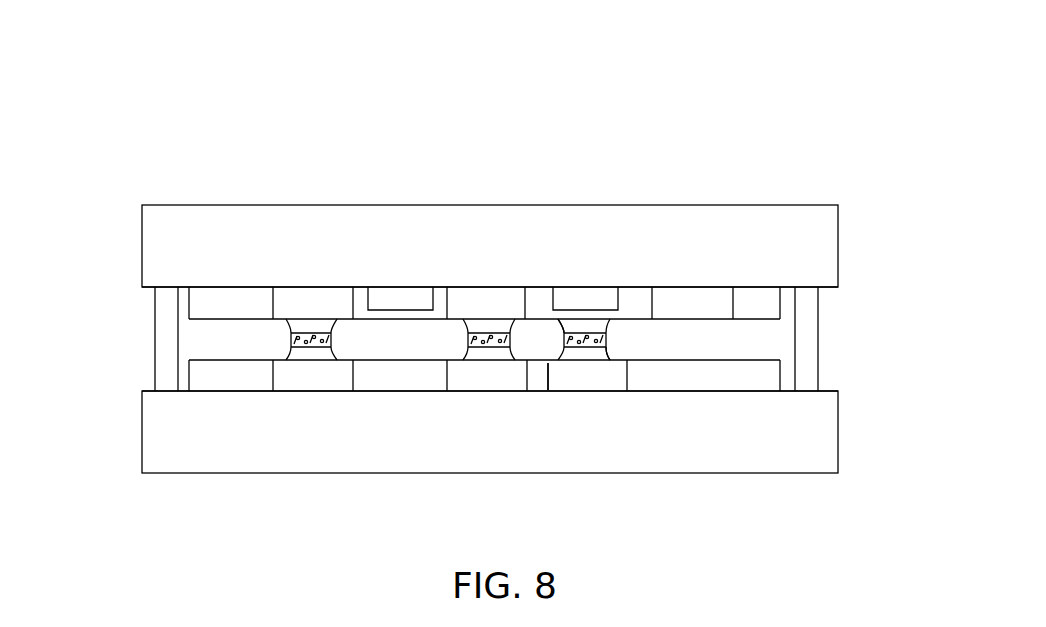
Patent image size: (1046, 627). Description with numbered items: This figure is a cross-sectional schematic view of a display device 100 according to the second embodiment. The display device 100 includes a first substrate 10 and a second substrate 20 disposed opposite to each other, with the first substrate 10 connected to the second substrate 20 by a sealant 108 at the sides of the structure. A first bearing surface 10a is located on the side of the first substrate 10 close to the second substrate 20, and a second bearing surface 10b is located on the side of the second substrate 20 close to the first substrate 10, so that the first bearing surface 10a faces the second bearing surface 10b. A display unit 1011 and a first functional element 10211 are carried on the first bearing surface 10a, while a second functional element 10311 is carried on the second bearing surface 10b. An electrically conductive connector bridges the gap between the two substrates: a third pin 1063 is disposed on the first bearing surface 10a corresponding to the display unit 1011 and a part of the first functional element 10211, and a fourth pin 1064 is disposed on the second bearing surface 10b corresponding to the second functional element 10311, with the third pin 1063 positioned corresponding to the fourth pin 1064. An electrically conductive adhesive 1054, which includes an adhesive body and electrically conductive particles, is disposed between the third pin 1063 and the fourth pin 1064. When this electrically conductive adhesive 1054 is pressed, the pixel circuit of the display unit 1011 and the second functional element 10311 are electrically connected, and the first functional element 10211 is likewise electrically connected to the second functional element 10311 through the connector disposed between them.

The display device 100 is at (487, 123).
The first substrate 10 is at (803, 260).
The first bearing surface 10a is at (826, 289).
The second bearing surface 10b is at (823, 388).
The second substrate 20 is at (803, 434).
The sealant 108 is at (178, 346).
The display unit 1011 is at (312, 297).
The first functional element 10211 is at (396, 295).
The second functional element 10311 is at (302, 378).
The third pin 1063 is at (590, 328).
The electrically conductive adhesive 1054 is at (557, 320).
The fourth pin 1064 is at (603, 352).